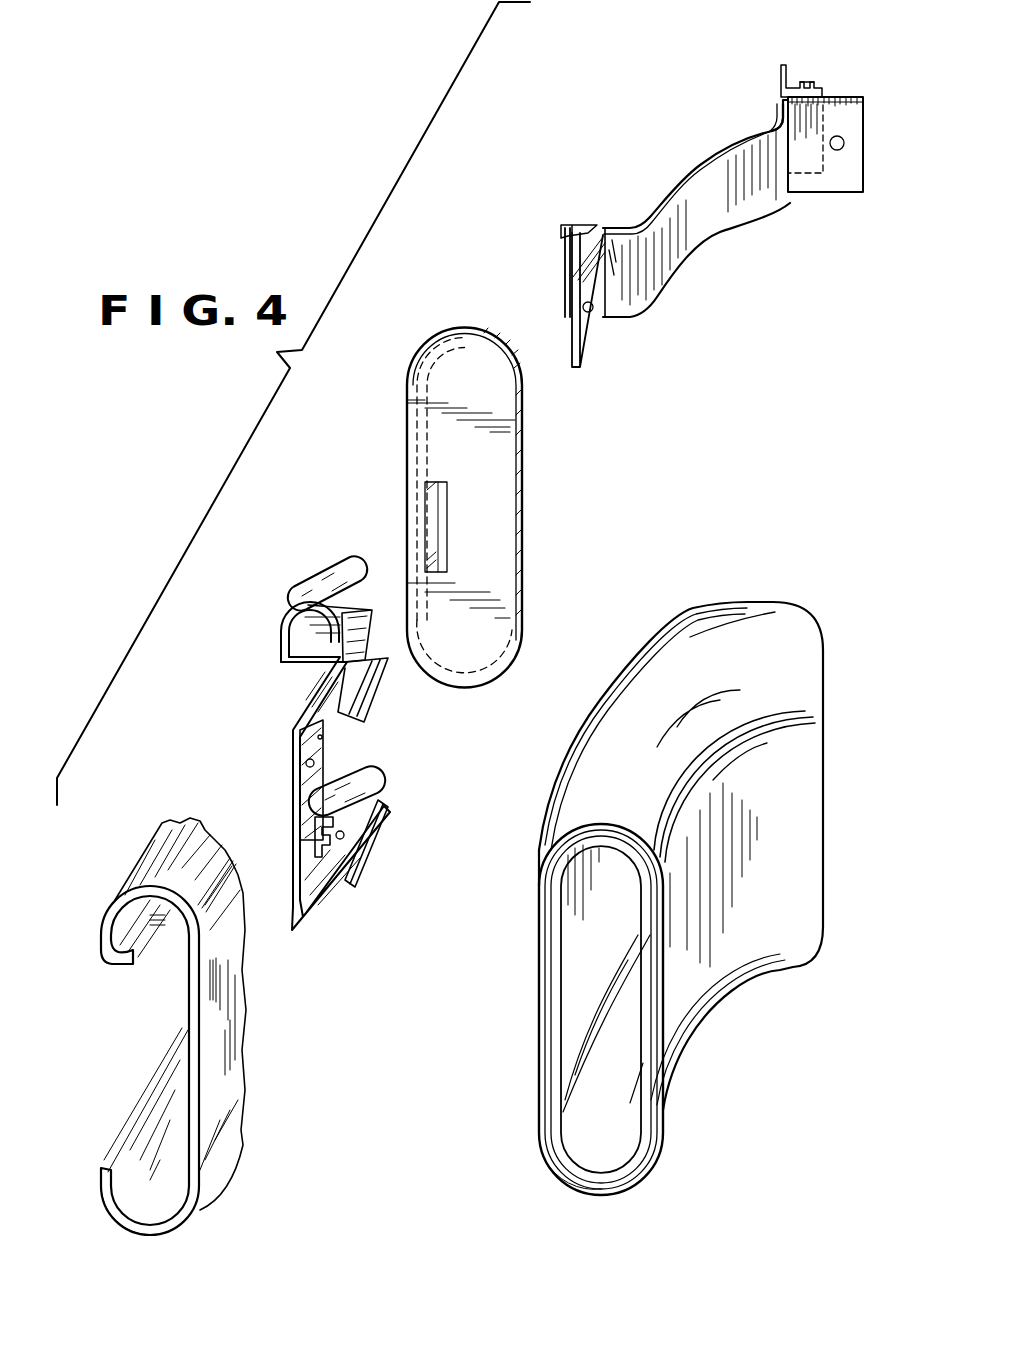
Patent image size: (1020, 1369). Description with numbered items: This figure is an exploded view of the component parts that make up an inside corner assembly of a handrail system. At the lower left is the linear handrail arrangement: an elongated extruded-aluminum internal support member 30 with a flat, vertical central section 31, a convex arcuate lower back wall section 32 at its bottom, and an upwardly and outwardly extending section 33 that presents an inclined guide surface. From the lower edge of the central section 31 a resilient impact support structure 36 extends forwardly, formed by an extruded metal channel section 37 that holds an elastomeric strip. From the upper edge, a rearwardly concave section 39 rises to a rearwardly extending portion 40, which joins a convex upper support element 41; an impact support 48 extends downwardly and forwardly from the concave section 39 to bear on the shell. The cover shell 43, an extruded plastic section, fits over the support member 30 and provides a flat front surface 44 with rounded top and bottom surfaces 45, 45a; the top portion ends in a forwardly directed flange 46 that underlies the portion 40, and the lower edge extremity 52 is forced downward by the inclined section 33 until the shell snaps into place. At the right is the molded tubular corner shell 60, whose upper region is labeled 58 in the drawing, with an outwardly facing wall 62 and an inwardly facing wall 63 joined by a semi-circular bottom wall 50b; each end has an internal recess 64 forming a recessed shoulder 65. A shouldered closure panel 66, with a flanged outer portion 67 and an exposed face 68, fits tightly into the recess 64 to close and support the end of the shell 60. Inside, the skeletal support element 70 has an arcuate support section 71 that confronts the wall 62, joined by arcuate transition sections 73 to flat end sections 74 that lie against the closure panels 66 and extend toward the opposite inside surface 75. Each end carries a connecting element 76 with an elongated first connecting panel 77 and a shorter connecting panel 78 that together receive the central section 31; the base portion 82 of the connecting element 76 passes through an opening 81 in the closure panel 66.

The internal support member 30 is at (338, 749).
The central section 31 is at (332, 732).
The lower back wall section 32 is at (280, 900).
The upwardly and outwardly extending section 33 is at (320, 907).
The resilient impact support structure 36 is at (382, 805).
The extruded metal channel section 37 is at (340, 777).
The rearwardly concave section 39 is at (337, 683).
The rearwardly extending portion 40 is at (312, 640).
The convex upper support element 41 is at (312, 582).
The cover shell 43 is at (220, 1002).
The front surface 44 is at (225, 1057).
The top surface 45 is at (191, 1048).
The bottom surface 45a is at (112, 1220).
The forwardly directed flange 46 is at (125, 967).
The impact support 48 is at (388, 680).
The bottom wall 50b is at (613, 1203).
The lower edge extremity 52 is at (113, 1163).
The cover curved portion 58 is at (672, 682).
The tubular corner shell 60 is at (677, 903).
The outwardly facing wall 62 is at (793, 843).
The inwardly facing wall 63 is at (540, 1035).
The internal recess 64 is at (550, 970).
The recessed shoulder 65 is at (557, 932).
The shouldered closure panel 66 is at (474, 508).
The flanged outer portion 67 is at (518, 577).
The exposed face 68 is at (512, 426).
The internal skeletal support element 70 is at (689, 206).
The arcuate support section 71 is at (699, 217).
The arcuate transition section 73 is at (635, 222).
The end section 74 is at (780, 103).
The opposite inside surface 75 is at (580, 885).
The connecting element 76 is at (617, 250).
The first connecting panel 77 is at (847, 180).
The shorter connecting panel 78 is at (813, 82).
The opening 81 is at (437, 540).
The base portion 82 is at (793, 78).